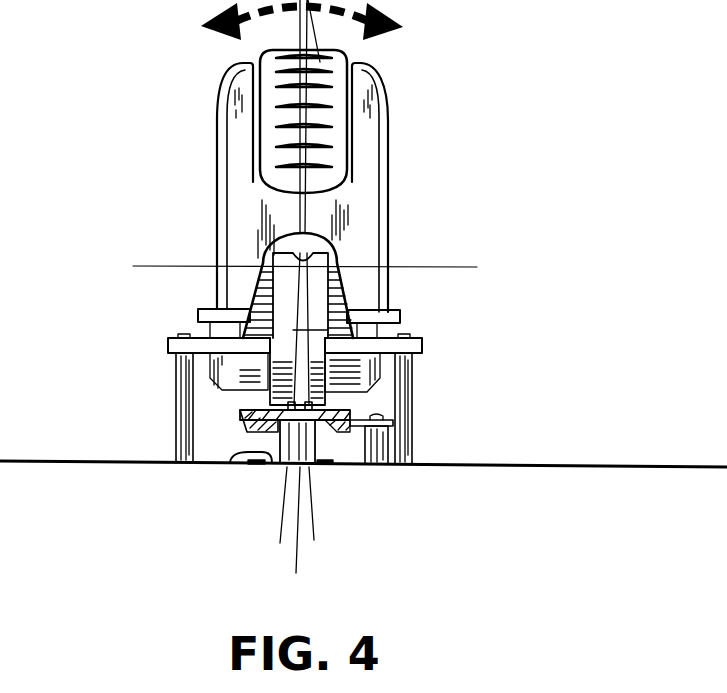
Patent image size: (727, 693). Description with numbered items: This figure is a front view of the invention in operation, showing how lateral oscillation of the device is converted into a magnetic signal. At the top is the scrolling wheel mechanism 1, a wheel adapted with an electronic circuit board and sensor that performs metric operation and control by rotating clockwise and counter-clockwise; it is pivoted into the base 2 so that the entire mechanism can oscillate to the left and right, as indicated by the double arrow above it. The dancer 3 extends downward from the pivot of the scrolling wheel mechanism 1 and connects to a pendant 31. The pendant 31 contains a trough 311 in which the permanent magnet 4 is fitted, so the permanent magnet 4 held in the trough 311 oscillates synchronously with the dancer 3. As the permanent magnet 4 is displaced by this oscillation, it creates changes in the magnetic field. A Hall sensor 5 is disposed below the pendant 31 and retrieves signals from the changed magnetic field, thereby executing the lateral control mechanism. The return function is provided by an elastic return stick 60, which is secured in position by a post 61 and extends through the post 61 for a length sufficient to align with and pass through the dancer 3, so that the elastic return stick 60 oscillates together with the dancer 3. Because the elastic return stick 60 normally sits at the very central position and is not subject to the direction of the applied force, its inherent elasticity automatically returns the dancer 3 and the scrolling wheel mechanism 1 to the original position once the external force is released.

The scrolling wheel mechanism 1 is at (406, 118).
The base 2 is at (340, 300).
The dancer 3 is at (285, 283).
The permanent magnet 4 is at (330, 395).
The elastic return stick 60 is at (312, 402).
The pendant 31 is at (340, 432).
The trough 311 is at (248, 432).
The Hall sensor 5 is at (266, 454).
The post 61 is at (270, 468).